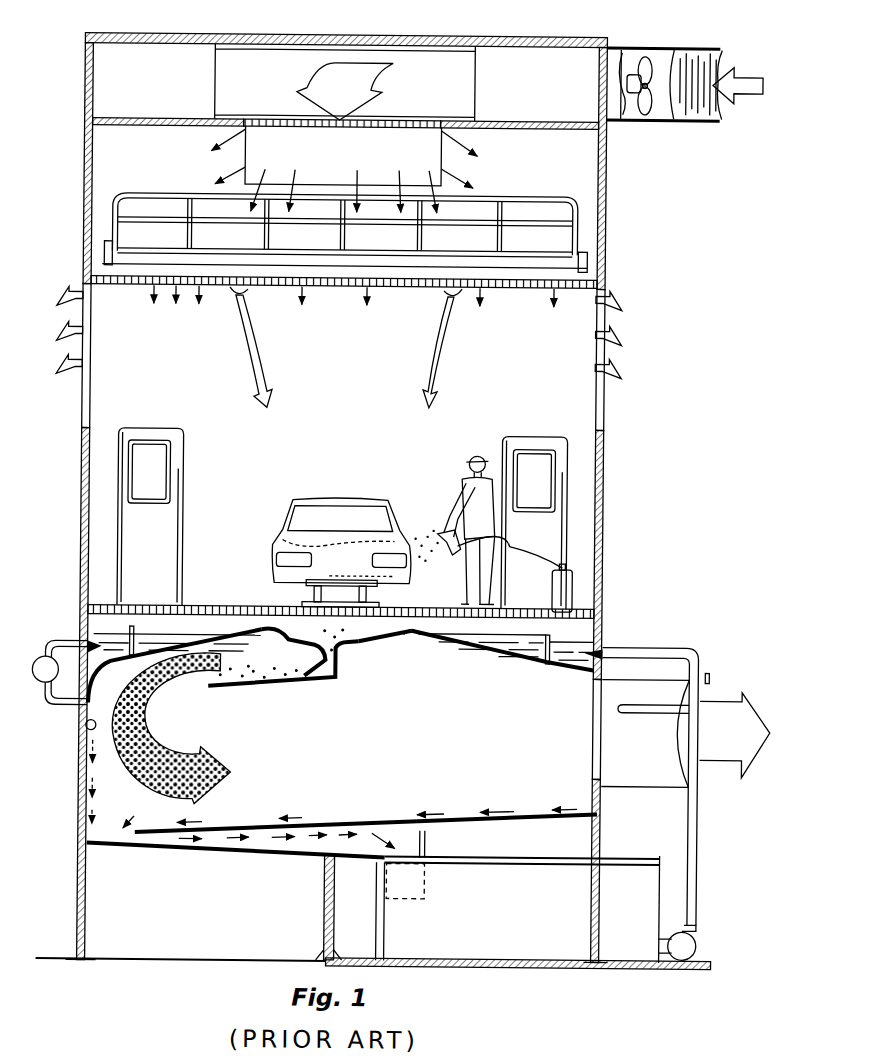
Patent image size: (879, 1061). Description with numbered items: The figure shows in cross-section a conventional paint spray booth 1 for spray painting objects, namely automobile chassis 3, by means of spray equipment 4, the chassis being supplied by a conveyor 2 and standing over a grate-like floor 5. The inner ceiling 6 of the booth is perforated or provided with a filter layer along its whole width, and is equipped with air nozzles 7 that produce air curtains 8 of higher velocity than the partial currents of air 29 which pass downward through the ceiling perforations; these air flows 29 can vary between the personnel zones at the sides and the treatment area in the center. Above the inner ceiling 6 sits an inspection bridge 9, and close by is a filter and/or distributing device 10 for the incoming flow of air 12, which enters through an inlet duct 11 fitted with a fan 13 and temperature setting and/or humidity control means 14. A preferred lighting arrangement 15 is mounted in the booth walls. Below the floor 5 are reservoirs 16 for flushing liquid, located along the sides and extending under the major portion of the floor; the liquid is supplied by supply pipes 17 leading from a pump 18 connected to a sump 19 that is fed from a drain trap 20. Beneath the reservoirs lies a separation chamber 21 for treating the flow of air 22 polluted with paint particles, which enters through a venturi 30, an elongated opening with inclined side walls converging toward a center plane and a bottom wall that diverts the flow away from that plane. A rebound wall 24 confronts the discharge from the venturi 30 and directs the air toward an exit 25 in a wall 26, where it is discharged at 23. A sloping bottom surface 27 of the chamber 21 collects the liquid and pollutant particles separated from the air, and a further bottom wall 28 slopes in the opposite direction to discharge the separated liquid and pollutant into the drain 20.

The booth 1 is at (89, 440).
The conveyor 2 is at (372, 598).
The automobile chassis 3 is at (343, 499).
The equipment 4 is at (445, 527).
The grate-like floor 5 is at (207, 606).
The inner ceiling 6 is at (341, 288).
The air nozzles 7 is at (238, 296).
The air curtains 8 is at (262, 362).
The inspection bridge 9 is at (513, 194).
The filter and/or distributing device 10 is at (329, 165).
The inlet duct 11 is at (657, 44).
The incoming flow of air 12 is at (358, 62).
The fan 13 is at (644, 120).
The temperature setting and/or humidity control means 14 is at (618, 48).
The lighting arrangement 15 is at (60, 333).
The reservoirs 16 is at (100, 644).
The supply pipes 17 is at (45, 658).
The pump 18 is at (700, 942).
The sump 19 is at (650, 882).
The drain trap 20 is at (420, 870).
The separation chamber 21 is at (260, 754).
The flow of air 22 is at (172, 748).
The discharge 23 is at (724, 702).
The rebound wall 24 is at (88, 734).
The exit 25 is at (593, 744).
The wall 26 is at (594, 684).
The sloping bottom surface 27 is at (250, 831).
The further bottom wall 28 is at (230, 852).
The partial currents of air 29 is at (201, 292).
The venturi 30 is at (333, 657).